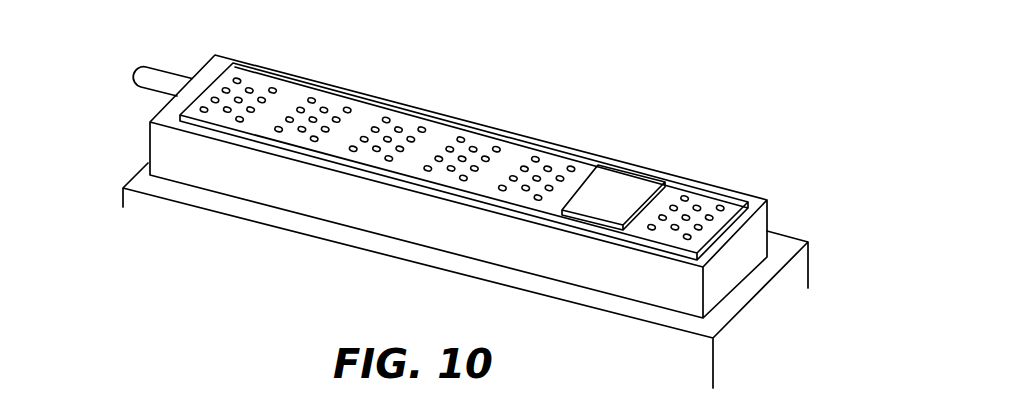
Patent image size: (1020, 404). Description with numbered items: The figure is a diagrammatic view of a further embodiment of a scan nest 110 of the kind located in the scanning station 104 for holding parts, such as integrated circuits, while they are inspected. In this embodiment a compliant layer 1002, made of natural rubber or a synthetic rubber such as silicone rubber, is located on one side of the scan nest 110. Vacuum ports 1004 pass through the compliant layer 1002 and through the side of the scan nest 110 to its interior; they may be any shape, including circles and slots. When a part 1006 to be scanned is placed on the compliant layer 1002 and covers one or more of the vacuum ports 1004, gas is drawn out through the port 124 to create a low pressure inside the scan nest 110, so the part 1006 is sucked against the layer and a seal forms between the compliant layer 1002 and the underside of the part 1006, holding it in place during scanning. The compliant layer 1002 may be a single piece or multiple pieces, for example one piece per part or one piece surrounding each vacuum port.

The scanning station 104 is at (757, 297).
The scan nest 110 is at (411, 107).
The port 124 is at (143, 72).
The compliant layer 1002 is at (227, 130).
The vacuum ports 1004 is at (311, 98).
The part 1006 is at (615, 187).